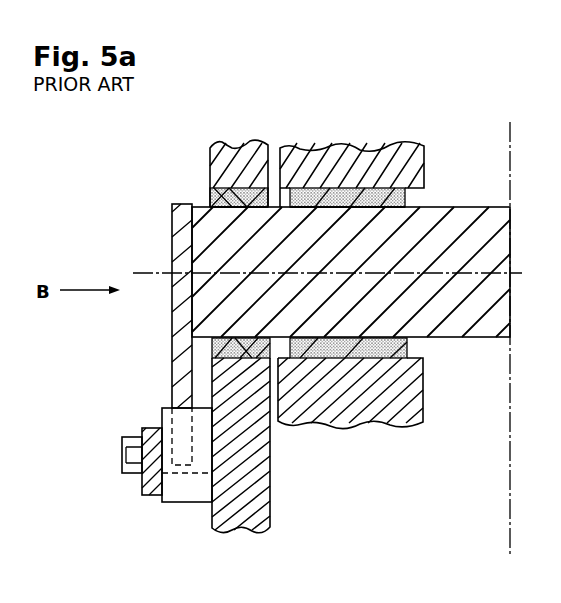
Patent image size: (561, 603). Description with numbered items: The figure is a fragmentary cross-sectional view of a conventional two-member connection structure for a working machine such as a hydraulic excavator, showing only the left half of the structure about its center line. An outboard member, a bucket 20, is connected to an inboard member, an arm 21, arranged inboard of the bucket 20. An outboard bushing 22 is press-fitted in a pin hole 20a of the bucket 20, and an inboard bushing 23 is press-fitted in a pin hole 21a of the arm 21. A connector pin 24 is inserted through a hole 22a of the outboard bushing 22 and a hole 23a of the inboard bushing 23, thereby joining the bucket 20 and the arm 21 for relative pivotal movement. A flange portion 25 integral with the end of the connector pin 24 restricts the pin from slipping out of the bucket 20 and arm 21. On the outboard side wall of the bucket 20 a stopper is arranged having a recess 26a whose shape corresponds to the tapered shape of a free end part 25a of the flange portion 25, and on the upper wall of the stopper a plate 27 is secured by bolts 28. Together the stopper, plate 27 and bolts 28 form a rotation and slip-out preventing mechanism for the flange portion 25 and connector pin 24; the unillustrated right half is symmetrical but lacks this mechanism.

The bucket 20 is at (222, 165).
The arm 21 is at (413, 160).
The outboard bushing 22 is at (213, 193).
The inboard bushing 23 is at (408, 187).
The connector pin 24 is at (483, 228).
The flange portion 25 is at (172, 227).
The pin hole 20a is at (221, 207).
The hole 22a is at (236, 207).
The pin hole 21a is at (375, 190).
The hole 23a is at (387, 190).
The free end part 25a is at (188, 440).
The recess 26a is at (172, 447).
The plate 27 is at (153, 496).
The bolt 28 is at (128, 476).